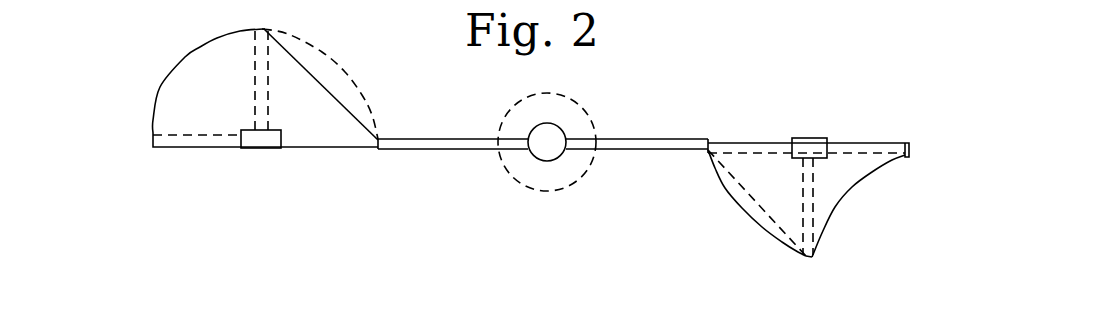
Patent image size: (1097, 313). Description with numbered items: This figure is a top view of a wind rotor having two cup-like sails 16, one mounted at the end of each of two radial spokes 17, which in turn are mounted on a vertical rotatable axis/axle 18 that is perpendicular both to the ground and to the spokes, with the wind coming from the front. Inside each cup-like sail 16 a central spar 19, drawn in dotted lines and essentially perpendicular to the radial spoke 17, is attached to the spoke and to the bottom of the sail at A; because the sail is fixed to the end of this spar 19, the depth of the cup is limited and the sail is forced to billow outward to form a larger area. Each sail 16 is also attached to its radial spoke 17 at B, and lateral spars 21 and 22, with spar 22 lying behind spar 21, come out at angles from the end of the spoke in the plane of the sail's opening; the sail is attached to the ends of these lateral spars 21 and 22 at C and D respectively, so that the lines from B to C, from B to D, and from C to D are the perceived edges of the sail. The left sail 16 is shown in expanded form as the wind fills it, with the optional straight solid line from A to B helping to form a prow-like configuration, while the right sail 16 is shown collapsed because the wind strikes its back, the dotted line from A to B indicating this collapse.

The cup-like sail 16 is at (312, 112).
The radial spoke 17 is at (630, 138).
The vertical rotatable axis/axle 18 is at (550, 162).
The central spar 19 is at (255, 78).
The lateral spar 21 is at (516, 143).
The lateral spar 22 is at (516, 143).
The attachment point at sail bottom A is at (264, 29).
The attachment point at radial spoke B is at (380, 143).
The attachment point at end of lateral spar 21 C is at (519, 143).
The attachment point at end of lateral spar 22 D is at (153, 135).